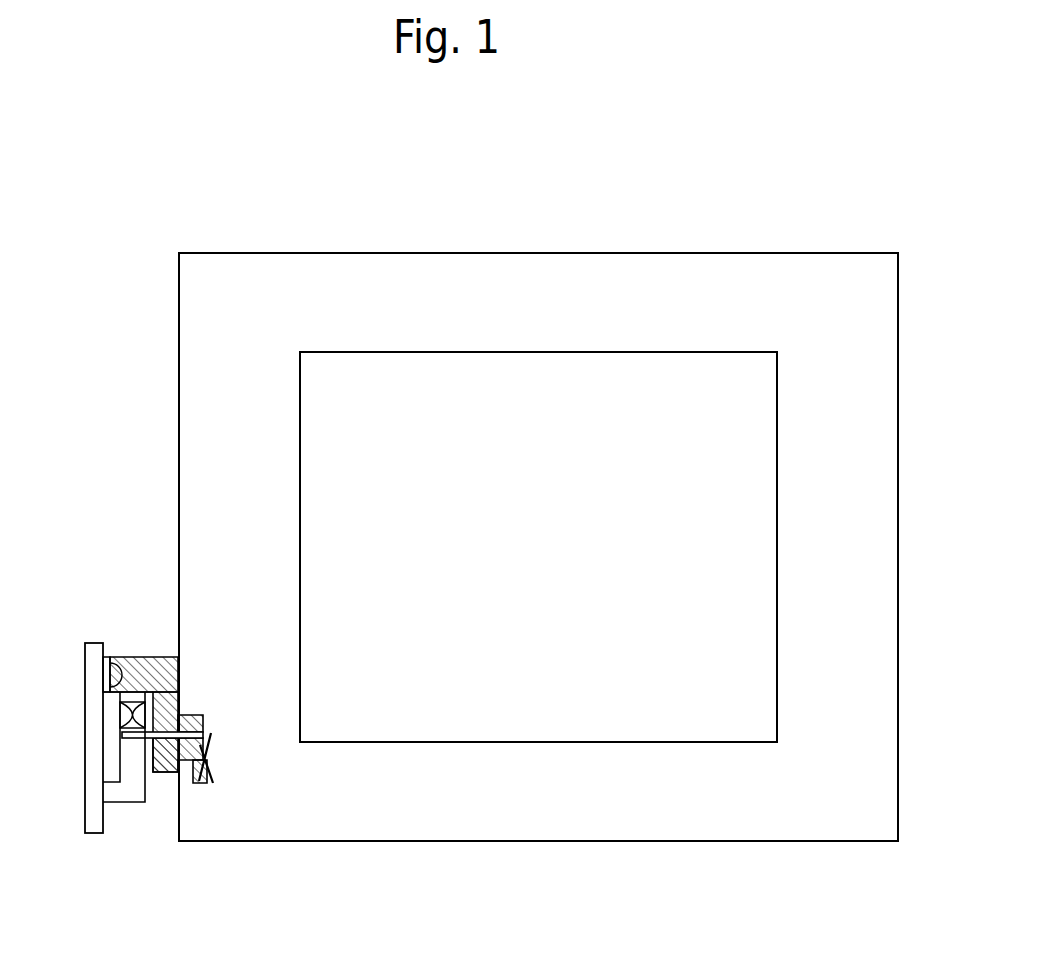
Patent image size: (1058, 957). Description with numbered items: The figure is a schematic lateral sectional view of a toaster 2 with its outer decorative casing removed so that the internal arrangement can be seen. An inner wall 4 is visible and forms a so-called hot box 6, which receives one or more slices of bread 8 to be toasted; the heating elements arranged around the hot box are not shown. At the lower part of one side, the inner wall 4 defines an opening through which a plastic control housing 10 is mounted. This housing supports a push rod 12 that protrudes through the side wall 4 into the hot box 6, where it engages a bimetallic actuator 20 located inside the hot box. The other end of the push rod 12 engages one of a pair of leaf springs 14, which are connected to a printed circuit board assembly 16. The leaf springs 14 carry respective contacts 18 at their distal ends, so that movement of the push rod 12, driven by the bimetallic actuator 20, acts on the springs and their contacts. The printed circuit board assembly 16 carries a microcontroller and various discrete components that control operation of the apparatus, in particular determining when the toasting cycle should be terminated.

The toaster 2 is at (615, 203).
The inner wall 4 is at (178, 415).
The hot box 6 is at (210, 300).
The slices of bread 8 is at (753, 460).
The plastic control housing 10 is at (143, 675).
The push rod 12 is at (132, 740).
The leaf springs 14 is at (125, 803).
The printed circuit board assembly 16 is at (92, 673).
The contacts 18 is at (122, 713).
The bimetallic actuator 20 is at (207, 775).